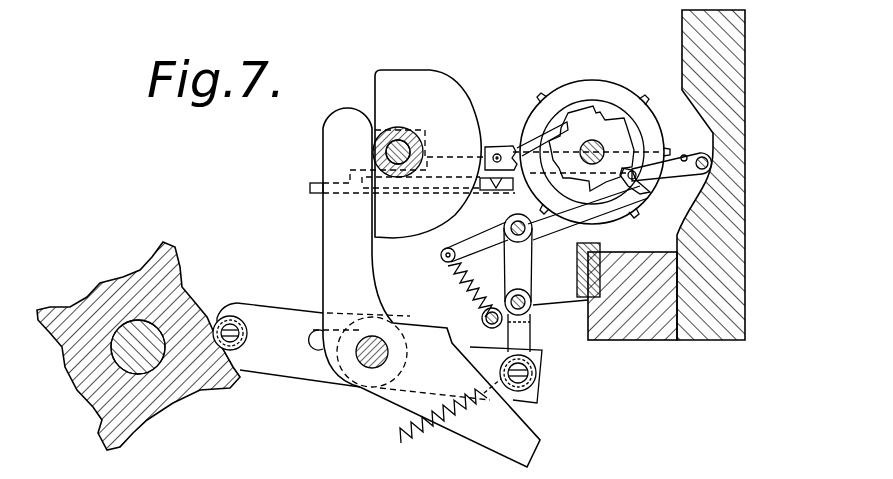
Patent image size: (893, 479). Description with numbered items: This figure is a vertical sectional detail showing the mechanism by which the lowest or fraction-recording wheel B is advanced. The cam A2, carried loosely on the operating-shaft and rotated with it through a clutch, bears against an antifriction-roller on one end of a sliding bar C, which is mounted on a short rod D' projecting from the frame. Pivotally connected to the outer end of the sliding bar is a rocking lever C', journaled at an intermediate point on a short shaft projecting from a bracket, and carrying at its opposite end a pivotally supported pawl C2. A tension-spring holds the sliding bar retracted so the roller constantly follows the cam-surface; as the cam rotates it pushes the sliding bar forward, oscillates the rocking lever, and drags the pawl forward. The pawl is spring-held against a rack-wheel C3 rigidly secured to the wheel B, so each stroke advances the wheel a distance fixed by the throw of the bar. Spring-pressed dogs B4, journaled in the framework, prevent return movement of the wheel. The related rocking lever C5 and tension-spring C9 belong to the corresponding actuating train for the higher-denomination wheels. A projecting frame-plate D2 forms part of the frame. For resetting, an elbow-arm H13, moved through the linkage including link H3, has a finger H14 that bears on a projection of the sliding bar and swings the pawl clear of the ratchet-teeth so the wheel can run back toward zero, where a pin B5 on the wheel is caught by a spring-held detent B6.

The cam A2 is at (120, 278).
The sliding bar C is at (351, 335).
The rocking lever C' is at (517, 362).
The pawl C2 is at (535, 238).
The rack-wheel C3 is at (591, 148).
The rocking lever C5 is at (506, 262).
The tension-spring C9 is at (462, 293).
The short rod D' is at (362, 371).
The frame-plate D2 is at (742, 180).
The fraction-recording wheel B is at (583, 78).
The spring-pressed dog B4 is at (518, 140).
The pin B5 is at (656, 182).
The detent B6 is at (676, 165).
The link H3 is at (427, 154).
The elbow-arm H13 is at (431, 287).
The finger H14 is at (505, 455).